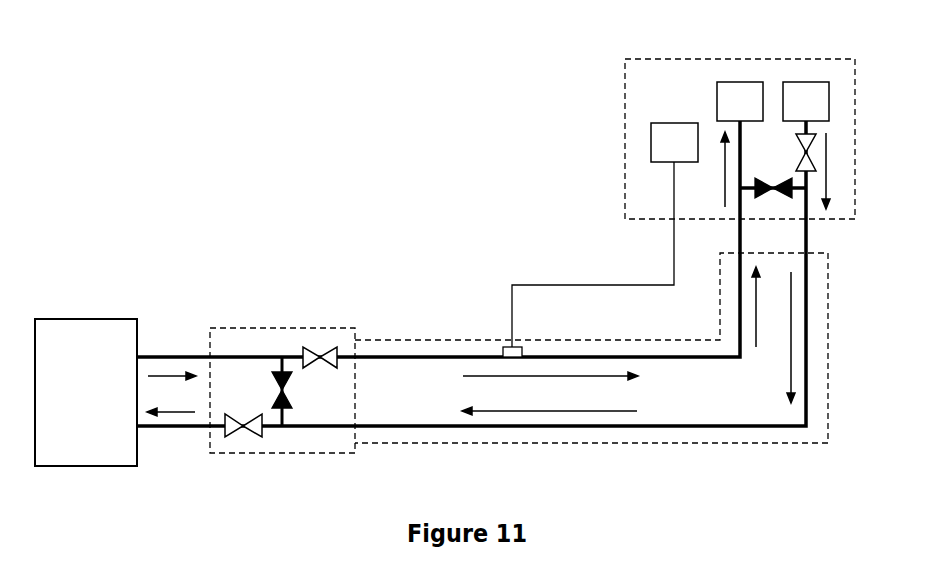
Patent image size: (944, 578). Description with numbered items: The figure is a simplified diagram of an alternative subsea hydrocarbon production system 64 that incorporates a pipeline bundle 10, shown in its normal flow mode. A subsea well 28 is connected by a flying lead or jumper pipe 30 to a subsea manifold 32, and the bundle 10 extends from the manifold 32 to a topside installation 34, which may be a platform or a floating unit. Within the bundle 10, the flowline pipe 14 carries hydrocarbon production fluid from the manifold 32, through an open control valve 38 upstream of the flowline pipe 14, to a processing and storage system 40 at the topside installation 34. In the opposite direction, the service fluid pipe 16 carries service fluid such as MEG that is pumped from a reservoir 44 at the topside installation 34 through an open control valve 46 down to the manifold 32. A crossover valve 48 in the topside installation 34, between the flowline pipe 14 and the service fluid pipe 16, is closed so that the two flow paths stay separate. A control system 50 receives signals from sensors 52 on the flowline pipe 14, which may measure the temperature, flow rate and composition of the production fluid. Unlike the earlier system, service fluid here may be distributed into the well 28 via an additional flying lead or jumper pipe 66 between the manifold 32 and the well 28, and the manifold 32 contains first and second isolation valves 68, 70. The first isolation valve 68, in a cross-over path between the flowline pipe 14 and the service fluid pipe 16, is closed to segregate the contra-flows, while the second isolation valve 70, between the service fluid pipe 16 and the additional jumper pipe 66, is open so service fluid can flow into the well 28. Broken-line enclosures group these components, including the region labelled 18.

The pipeline bundle 10 is at (426, 303).
The flowline pipe 14 is at (419, 360).
The service fluid pipe 16 is at (713, 422).
The conduit assembly 18 is at (830, 335).
The subsea well 28 is at (103, 327).
The flying lead or jumper pipe 30 is at (173, 355).
The subsea manifold 32 is at (268, 325).
The topside installation 34 is at (857, 88).
The control valve 38 is at (312, 355).
The processing and storage system 40 is at (742, 88).
The reservoir 44 is at (808, 88).
The control valve 46 is at (807, 158).
The crossover valve 48 is at (783, 178).
The control system 50 is at (675, 137).
The sensors 52 is at (512, 350).
The subsea hydrocarbon production system 64 is at (356, 171).
The additional flying lead or jumper pipe 66 is at (183, 428).
The first isolation valve 68 is at (287, 383).
The second isolation valve 70 is at (228, 422).